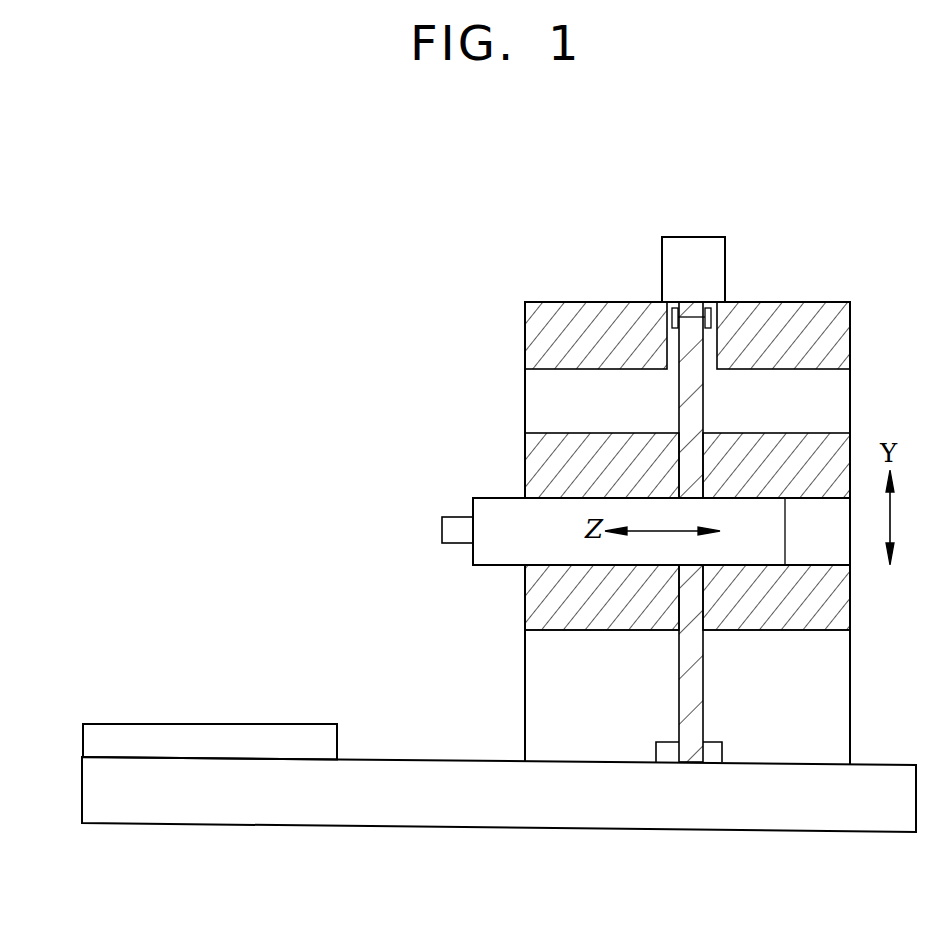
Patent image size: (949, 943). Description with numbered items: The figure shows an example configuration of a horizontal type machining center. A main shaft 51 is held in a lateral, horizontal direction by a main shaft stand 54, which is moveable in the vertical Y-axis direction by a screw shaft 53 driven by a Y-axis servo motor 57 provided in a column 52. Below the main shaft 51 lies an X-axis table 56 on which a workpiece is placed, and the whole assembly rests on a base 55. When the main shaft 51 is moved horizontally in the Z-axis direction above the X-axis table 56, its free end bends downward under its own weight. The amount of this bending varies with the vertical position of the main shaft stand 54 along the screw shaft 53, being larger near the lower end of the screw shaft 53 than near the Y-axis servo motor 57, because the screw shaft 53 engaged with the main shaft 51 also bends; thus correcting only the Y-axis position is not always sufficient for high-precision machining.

The main shaft 51 is at (492, 497).
The column 52 is at (843, 387).
The screw shaft 53 is at (695, 393).
The main shaft stand 54 is at (843, 447).
The base 55 is at (729, 820).
The X-axis table 56 is at (212, 730).
The Y-axis servo motor 57 is at (693, 237).